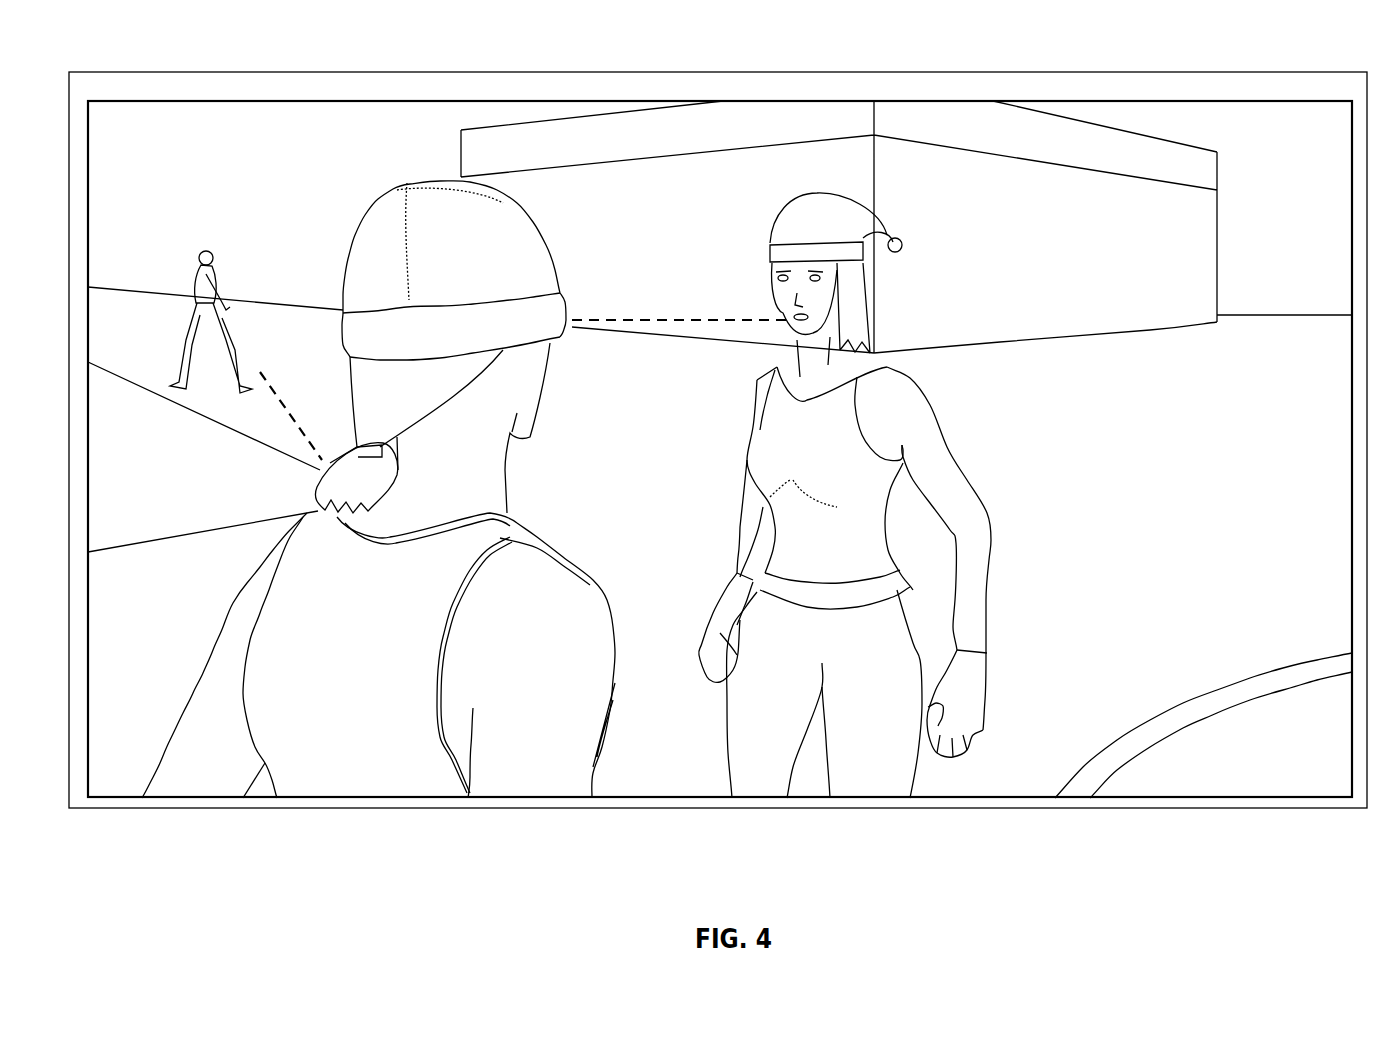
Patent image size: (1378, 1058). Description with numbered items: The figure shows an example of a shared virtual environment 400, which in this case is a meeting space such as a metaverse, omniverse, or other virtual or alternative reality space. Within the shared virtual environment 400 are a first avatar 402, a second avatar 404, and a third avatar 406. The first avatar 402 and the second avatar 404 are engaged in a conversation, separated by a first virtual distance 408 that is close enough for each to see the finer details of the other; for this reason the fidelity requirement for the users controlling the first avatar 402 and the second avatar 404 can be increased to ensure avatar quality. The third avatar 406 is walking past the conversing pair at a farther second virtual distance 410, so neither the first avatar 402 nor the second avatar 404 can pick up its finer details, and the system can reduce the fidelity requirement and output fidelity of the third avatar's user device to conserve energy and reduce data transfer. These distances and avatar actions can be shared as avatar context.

The shared virtual environment 400 is at (1257, 85).
The first avatar 402 is at (392, 190).
The second avatar 404 is at (780, 209).
The third avatar 406 is at (199, 252).
The first virtual distance 408 is at (680, 323).
The second virtual distance 410 is at (310, 438).